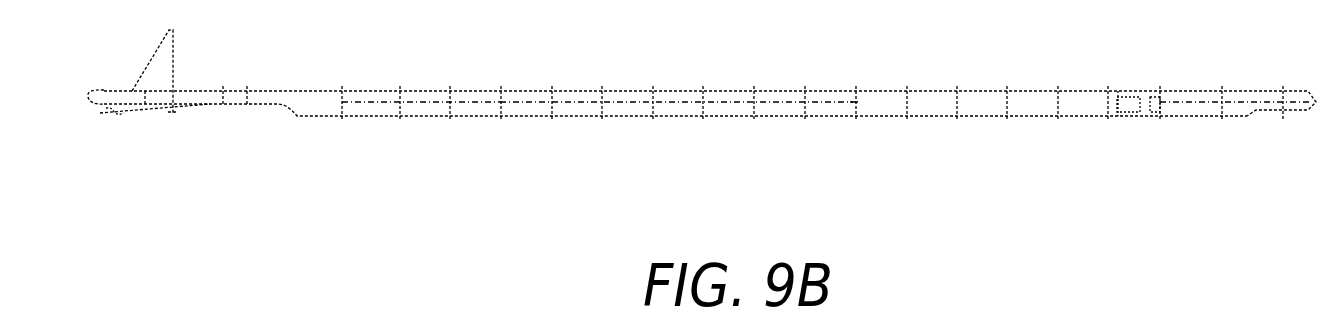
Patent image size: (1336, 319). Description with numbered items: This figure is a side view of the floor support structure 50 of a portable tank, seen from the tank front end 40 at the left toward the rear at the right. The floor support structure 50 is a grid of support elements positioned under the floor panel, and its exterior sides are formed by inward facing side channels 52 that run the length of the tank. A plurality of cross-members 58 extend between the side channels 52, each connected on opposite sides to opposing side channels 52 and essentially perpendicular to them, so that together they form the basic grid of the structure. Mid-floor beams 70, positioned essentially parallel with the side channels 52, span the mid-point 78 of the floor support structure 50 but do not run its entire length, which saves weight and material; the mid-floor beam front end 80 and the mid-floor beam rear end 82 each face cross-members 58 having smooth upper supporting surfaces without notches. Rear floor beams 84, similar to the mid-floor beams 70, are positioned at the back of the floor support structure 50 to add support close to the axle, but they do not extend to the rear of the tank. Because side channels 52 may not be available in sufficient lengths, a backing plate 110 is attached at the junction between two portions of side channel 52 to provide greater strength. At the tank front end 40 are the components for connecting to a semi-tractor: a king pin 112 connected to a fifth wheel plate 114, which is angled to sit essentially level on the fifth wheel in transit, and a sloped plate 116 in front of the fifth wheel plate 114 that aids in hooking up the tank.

The tank front end 40 is at (57, 98).
The floor support structure 50 is at (775, 170).
The side channels 52 is at (367, 108).
The cross-members 58 is at (606, 94).
The mid-floor beams 70 is at (580, 102).
The mid-point 78 is at (690, 117).
The mid-floor beam front end 80 is at (497, 100).
The mid-floor beam rear end 82 is at (855, 105).
The rear floor beams 84 is at (1207, 103).
The backing plate 110 is at (1125, 113).
The king pin 112 is at (174, 113).
The fifth wheel plate 114 is at (162, 112).
The sloped plate 116 is at (107, 112).